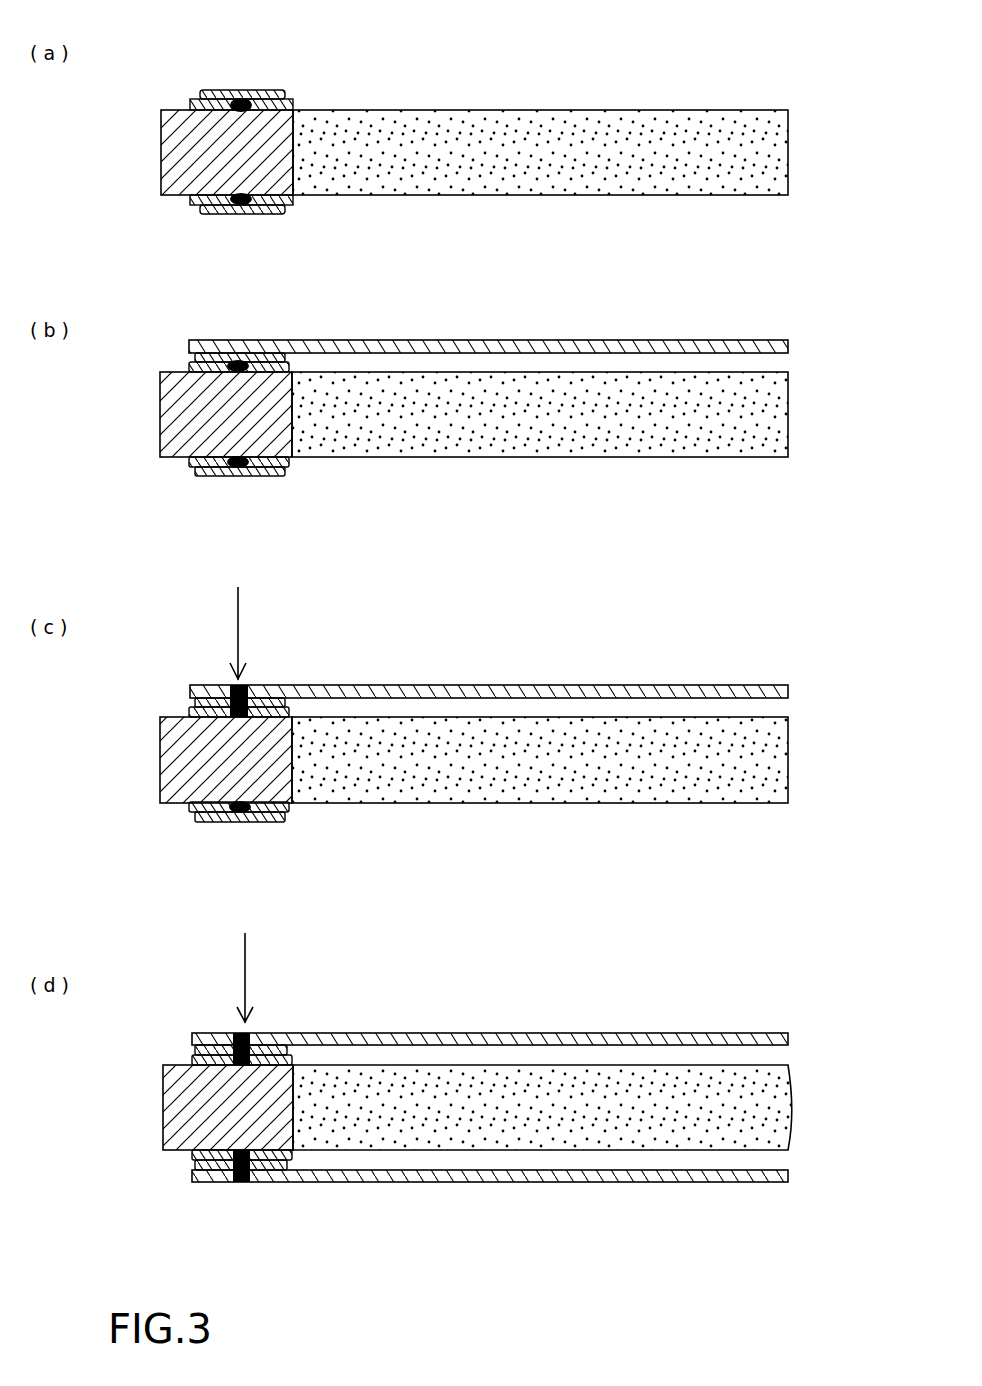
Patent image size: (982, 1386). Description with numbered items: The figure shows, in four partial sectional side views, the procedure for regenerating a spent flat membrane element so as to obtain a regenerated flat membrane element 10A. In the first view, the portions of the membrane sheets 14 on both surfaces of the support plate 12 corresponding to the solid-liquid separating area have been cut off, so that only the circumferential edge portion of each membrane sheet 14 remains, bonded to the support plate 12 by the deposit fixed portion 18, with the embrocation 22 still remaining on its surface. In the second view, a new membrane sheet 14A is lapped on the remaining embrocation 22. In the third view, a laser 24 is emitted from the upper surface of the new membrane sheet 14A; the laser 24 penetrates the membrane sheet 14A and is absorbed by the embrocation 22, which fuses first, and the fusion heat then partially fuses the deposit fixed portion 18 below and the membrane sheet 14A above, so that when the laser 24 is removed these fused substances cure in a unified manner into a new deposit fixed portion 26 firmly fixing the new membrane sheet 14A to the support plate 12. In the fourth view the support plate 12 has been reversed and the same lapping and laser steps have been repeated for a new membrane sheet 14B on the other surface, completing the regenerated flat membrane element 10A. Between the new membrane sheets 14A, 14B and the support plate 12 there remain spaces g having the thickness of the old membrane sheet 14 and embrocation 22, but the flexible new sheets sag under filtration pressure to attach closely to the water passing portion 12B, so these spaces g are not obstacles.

The regenerated flat membrane element 10A is at (737, 988).
The support plate 12 is at (542, 642).
The water passing portion 12B is at (542, 1161).
The membrane sheet 14 is at (293, 108).
The new membrane sheet 14A is at (495, 347).
The new membrane sheet 14B is at (490, 1033).
The deposit fixed portion 18 is at (243, 110).
The embrocation 22 is at (245, 90).
The laser 24 is at (240, 606).
The new deposit fixed portion 26 is at (233, 686).
The space g is at (777, 1059).